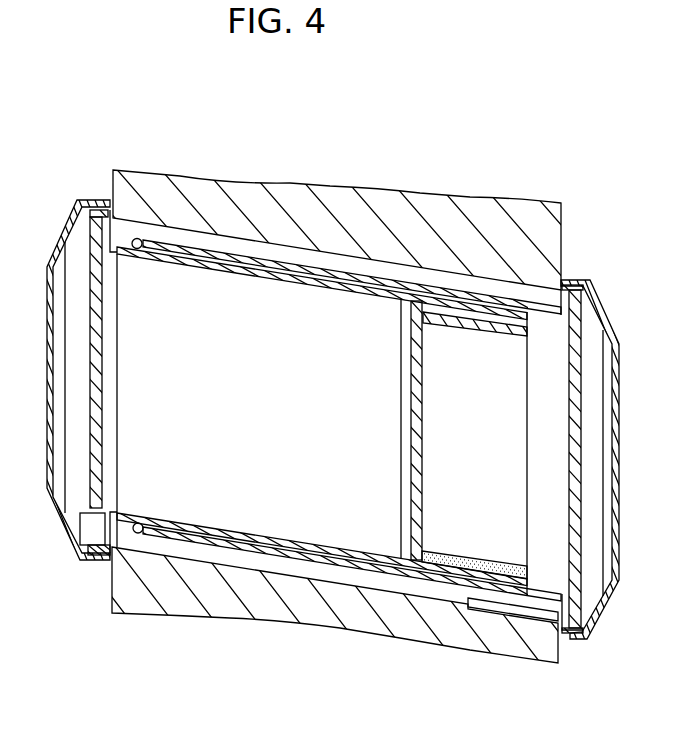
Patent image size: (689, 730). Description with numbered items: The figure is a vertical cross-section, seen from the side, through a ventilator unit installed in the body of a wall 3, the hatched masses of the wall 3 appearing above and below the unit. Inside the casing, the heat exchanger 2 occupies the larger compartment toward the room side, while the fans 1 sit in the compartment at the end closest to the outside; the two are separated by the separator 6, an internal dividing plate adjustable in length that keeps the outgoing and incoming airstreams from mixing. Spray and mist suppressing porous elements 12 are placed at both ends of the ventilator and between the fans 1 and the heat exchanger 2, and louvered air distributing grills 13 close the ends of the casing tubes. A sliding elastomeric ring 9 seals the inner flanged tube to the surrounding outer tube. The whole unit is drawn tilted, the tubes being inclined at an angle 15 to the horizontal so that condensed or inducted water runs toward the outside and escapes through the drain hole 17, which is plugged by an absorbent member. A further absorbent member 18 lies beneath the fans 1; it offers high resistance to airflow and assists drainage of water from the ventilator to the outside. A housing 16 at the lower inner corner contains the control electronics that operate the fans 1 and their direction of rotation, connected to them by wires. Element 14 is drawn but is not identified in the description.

The fans 1 is at (468, 455).
The heat exchanger 2 is at (238, 359).
The wall 3 is at (357, 222).
The separator 6 is at (544, 332).
The sliding elastomeric ring 9 is at (135, 238).
The porous elements 12 is at (90, 258).
The louvered air distributing grills 13 is at (62, 307).
The filler strip 14 is at (472, 325).
The angle 15 is at (482, 602).
The housing 16 is at (80, 553).
The drain hole 17 is at (567, 640).
The absorbent member 18 is at (462, 560).